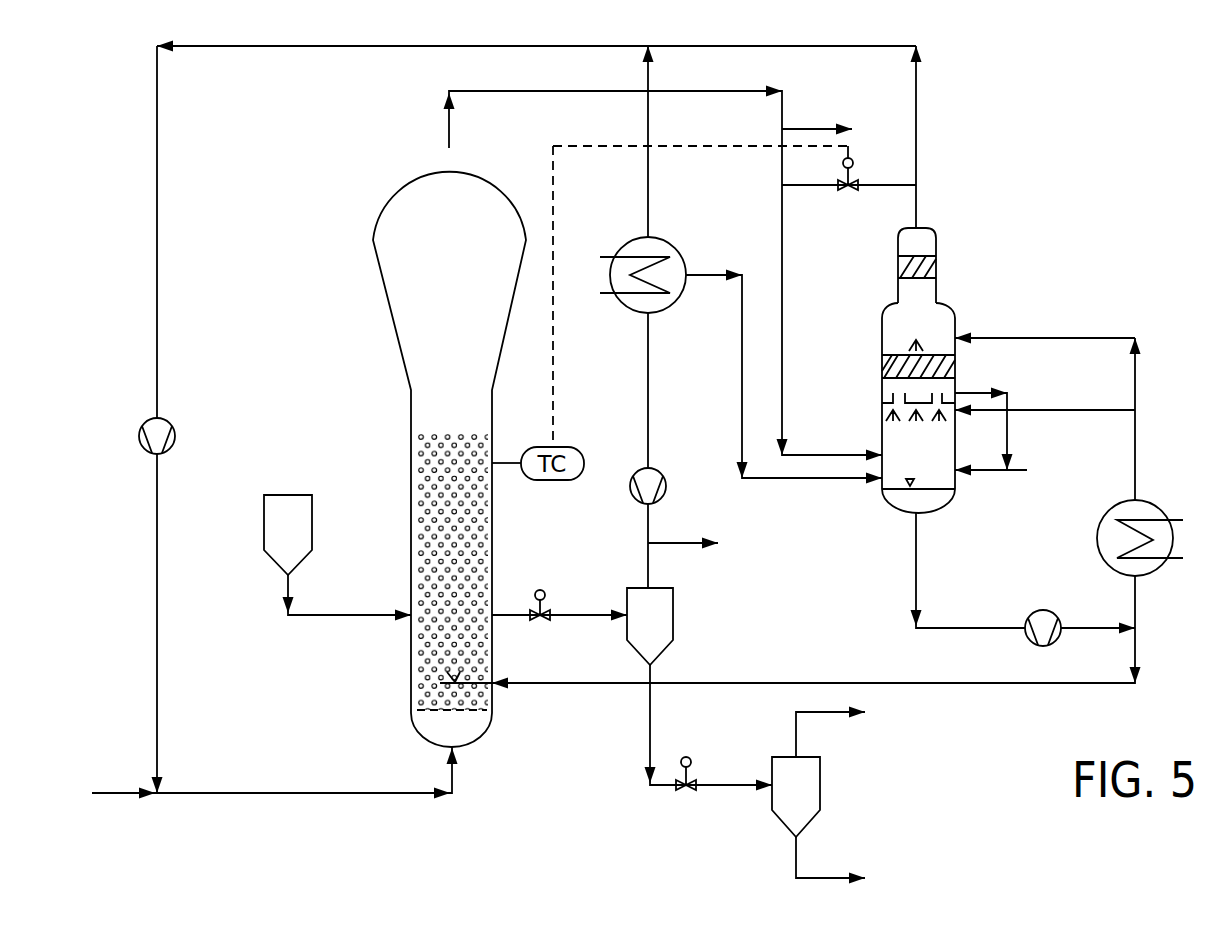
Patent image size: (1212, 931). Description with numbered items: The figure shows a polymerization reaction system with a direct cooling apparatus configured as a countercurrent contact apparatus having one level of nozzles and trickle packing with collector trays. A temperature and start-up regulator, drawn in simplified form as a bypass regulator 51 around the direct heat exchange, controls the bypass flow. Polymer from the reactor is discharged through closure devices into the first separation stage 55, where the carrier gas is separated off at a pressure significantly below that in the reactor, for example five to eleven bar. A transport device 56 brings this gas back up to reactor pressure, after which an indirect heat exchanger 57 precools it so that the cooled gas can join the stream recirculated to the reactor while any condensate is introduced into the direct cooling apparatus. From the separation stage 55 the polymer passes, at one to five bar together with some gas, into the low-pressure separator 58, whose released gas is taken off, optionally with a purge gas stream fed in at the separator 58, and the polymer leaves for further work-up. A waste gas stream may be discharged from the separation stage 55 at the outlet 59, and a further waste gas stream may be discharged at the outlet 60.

The bypass regulator 51 is at (848, 197).
The first separation stage 55 is at (674, 617).
The transport device 56 is at (666, 486).
The indirect heat exchanger 57 is at (668, 240).
The separator 58 is at (820, 785).
The waste gas stream outlet 59 is at (735, 543).
The further waste gas stream outlet 60 is at (840, 128).